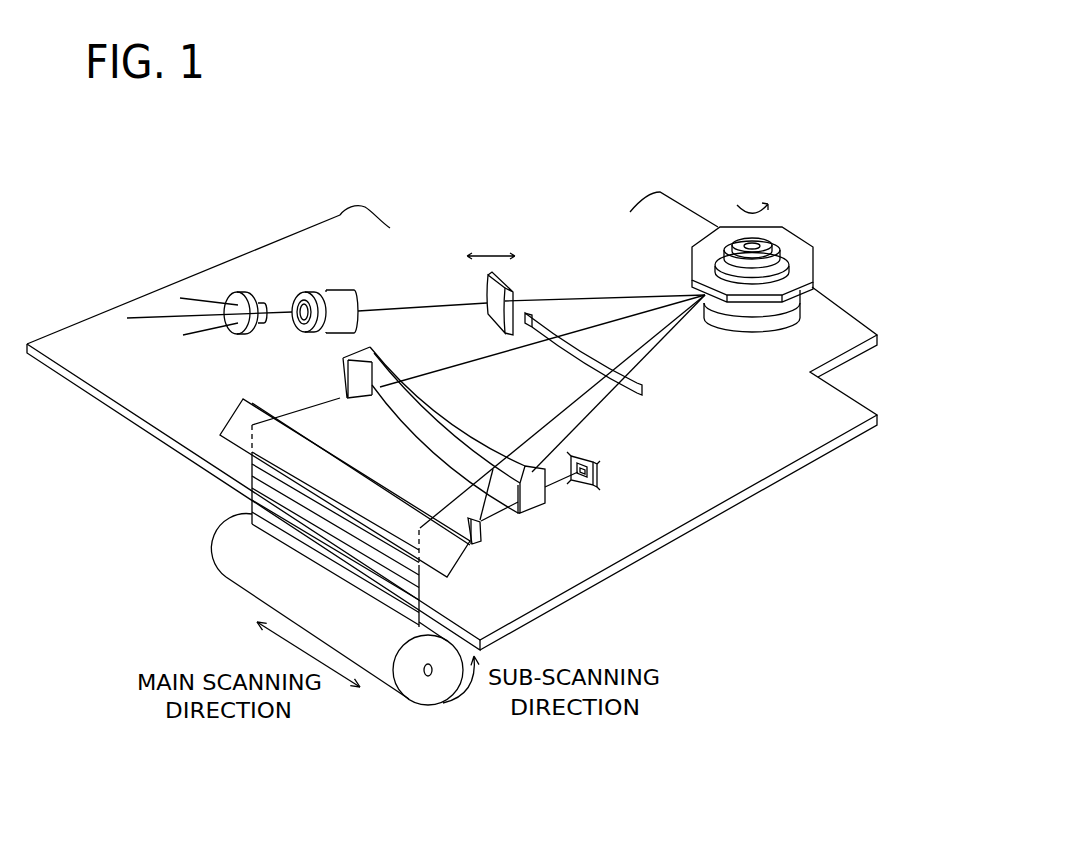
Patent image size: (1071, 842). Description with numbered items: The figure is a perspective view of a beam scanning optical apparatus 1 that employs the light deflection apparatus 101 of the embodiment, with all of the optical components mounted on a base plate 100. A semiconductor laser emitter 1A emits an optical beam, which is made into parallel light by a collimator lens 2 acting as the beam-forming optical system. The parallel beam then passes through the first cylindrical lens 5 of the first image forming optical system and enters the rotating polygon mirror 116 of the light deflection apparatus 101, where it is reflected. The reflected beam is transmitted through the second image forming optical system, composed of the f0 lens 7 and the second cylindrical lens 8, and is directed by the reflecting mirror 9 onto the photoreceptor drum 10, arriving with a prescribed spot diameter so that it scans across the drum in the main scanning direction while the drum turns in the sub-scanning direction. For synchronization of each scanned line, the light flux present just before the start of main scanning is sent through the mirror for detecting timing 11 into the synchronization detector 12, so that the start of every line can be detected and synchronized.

The beam scanning optical apparatus 1 is at (582, 234).
The semiconductor laser emitter 1A is at (238, 291).
The collimator lens 2 is at (338, 288).
The first cylindrical lens 5 is at (507, 278).
The f0 lens 7 is at (557, 363).
The second cylindrical lens 8 is at (452, 414).
The reflecting mirror 9 is at (468, 558).
The photoreceptor drum 10 is at (223, 577).
The mirror for detecting timing 11 is at (484, 532).
The synchronization detector 12 is at (579, 488).
The base plate 100 is at (745, 466).
The light deflection apparatus 101 is at (811, 203).
The polygon mirror 116 is at (729, 230).